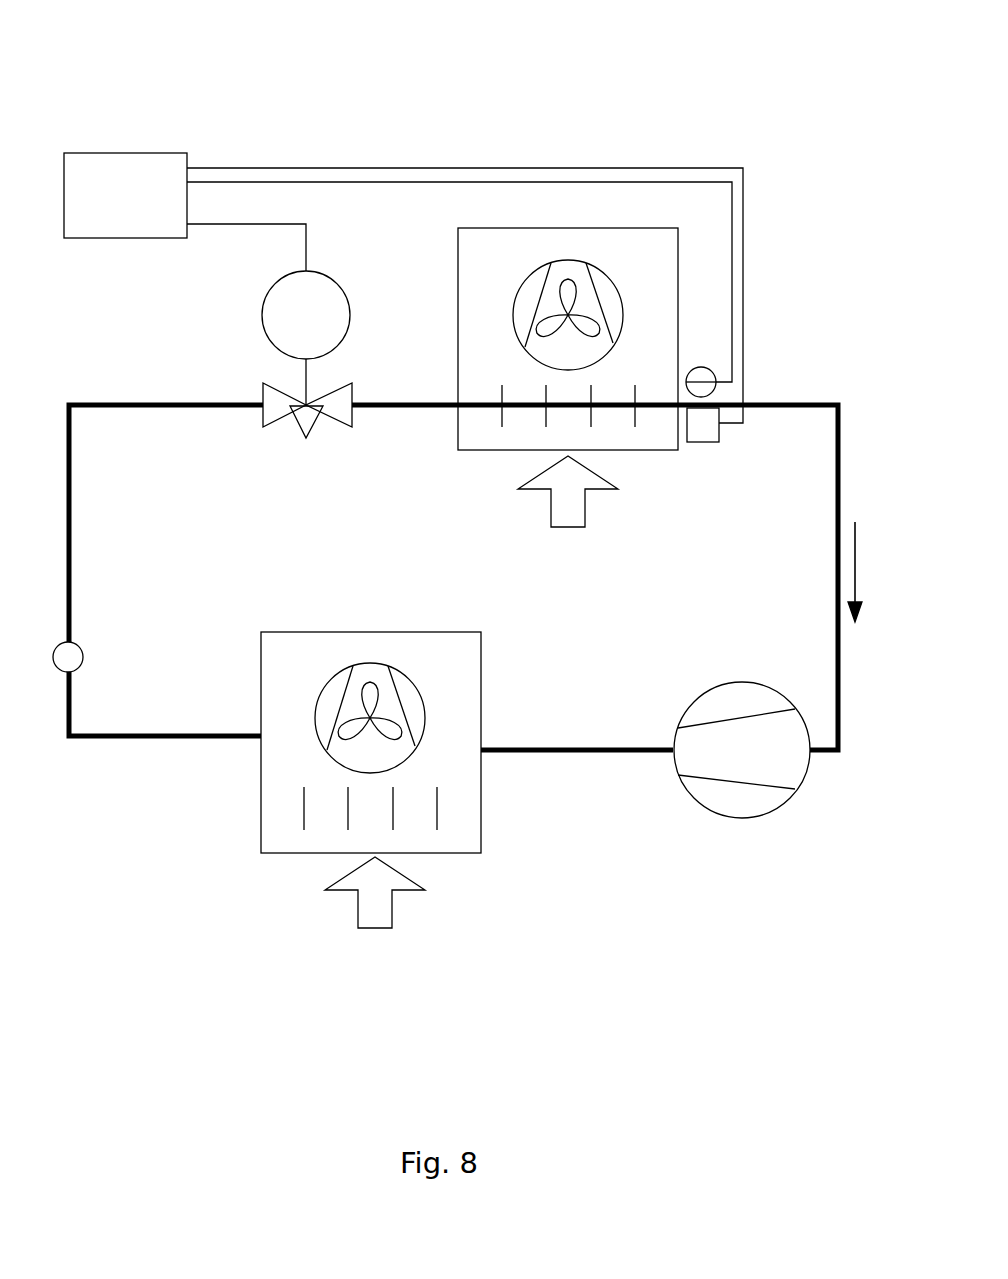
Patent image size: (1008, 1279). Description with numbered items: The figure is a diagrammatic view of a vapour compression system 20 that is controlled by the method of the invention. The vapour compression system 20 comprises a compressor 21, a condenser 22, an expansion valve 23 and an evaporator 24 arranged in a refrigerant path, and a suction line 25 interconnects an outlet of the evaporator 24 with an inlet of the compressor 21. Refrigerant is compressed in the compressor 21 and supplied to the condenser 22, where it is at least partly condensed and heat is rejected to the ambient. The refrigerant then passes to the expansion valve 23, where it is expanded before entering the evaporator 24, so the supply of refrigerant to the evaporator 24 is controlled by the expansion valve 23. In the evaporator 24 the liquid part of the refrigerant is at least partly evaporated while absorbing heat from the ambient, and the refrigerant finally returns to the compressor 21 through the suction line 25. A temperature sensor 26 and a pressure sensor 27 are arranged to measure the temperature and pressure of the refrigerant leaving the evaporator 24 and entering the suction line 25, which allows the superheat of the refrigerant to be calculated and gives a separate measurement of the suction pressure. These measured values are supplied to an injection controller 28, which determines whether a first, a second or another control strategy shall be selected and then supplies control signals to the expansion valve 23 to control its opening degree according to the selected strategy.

The vapour compression system 20 is at (793, 127).
The compressor 21 is at (757, 790).
The condenser 22 is at (283, 783).
The expansion valve 23 is at (272, 412).
The evaporator 24 is at (618, 250).
The suction line 25 is at (840, 493).
The temperature sensor 26 is at (707, 380).
The pressure sensor 27 is at (712, 432).
The injection controller 28 is at (88, 162).